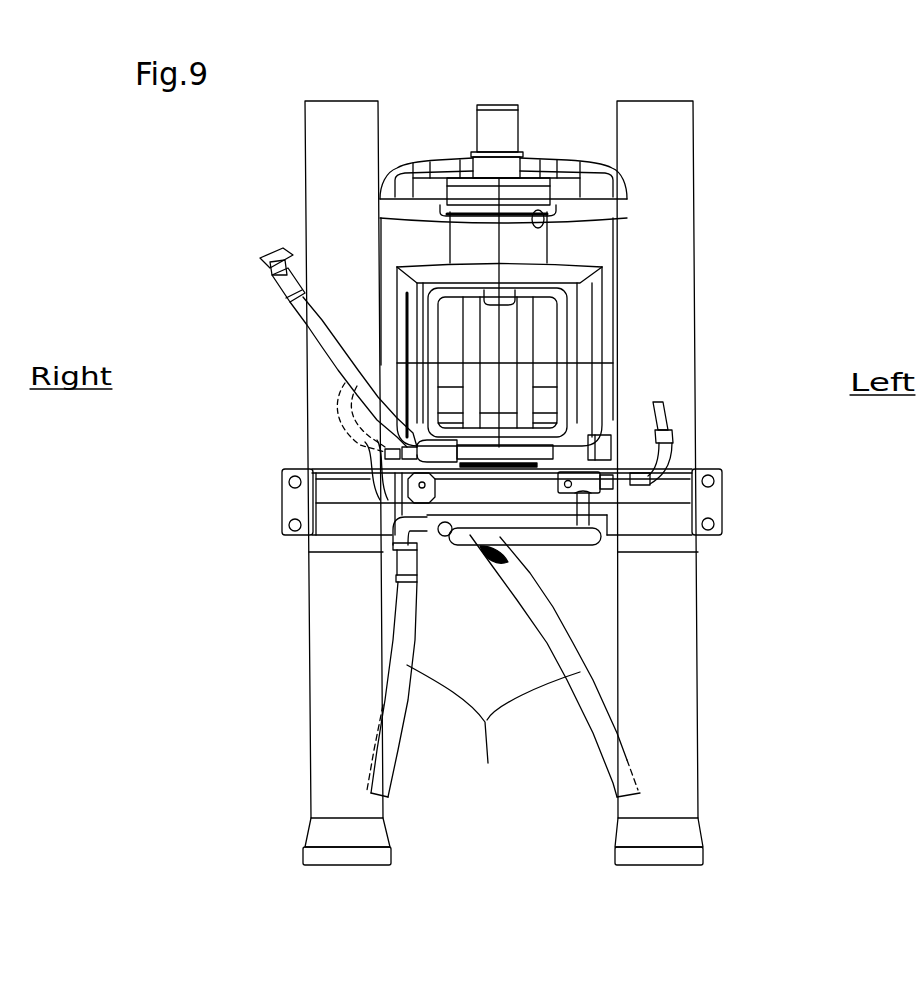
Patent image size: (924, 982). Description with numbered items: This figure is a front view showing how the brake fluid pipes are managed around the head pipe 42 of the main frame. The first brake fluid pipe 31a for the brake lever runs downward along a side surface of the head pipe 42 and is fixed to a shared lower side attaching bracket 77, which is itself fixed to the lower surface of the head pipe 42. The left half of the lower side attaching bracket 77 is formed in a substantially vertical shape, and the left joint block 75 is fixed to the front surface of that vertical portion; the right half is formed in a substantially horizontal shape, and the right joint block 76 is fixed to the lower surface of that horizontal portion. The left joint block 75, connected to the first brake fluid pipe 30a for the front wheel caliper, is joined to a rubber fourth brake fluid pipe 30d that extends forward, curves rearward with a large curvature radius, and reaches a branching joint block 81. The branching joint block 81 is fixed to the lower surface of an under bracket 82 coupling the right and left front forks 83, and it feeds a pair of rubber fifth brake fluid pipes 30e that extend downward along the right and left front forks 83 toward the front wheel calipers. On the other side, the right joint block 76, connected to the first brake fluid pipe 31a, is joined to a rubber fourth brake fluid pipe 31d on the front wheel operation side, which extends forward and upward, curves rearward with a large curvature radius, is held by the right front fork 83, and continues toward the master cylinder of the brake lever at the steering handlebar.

The head pipe 42 is at (567, 347).
The fourth brake fluid pipe on the front wheel operation side 31d is at (333, 355).
The first brake fluid pipe for the brake lever 31a is at (345, 434).
The right joint block 76 is at (370, 495).
The under bracket 82 is at (337, 518).
The left joint block 75 is at (607, 483).
The front fork 83 is at (323, 647).
The first brake fluid pipe for the front wheel caliper 30a is at (663, 448).
The fourth brake fluid pipe 30d is at (553, 537).
The lower side attaching bracket 77 is at (521, 470).
The branching joint block 81 is at (433, 540).
The fifth brake fluid pipe for the front wheel caliper 30e is at (493, 732).